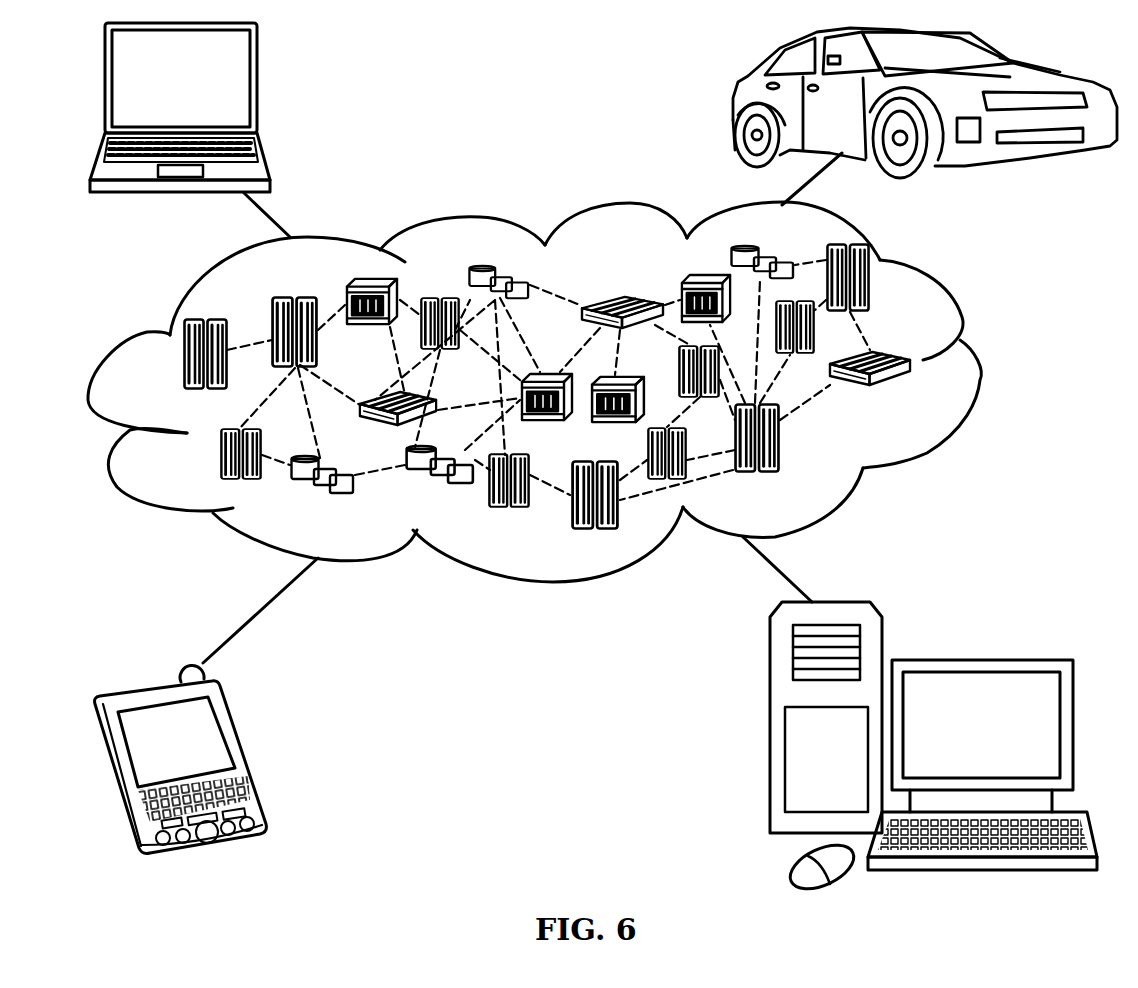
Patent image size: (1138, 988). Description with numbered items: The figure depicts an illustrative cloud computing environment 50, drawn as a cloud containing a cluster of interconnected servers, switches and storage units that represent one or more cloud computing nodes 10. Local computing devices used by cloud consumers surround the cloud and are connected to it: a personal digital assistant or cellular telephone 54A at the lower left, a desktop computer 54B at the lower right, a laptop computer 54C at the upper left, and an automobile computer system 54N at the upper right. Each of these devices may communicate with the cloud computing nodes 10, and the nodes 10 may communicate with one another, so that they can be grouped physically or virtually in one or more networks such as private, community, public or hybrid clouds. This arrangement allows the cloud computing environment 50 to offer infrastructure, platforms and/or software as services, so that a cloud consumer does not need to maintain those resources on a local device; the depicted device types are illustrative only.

The cloud computing node 10 is at (925, 398).
The cloud computing environment 50 is at (978, 363).
The personal digital assistant or cellular telephone 54A is at (247, 756).
The desktop computer 54B is at (978, 660).
The laptop computer 54C is at (257, 90).
The automobile computer system 54N is at (740, 102).